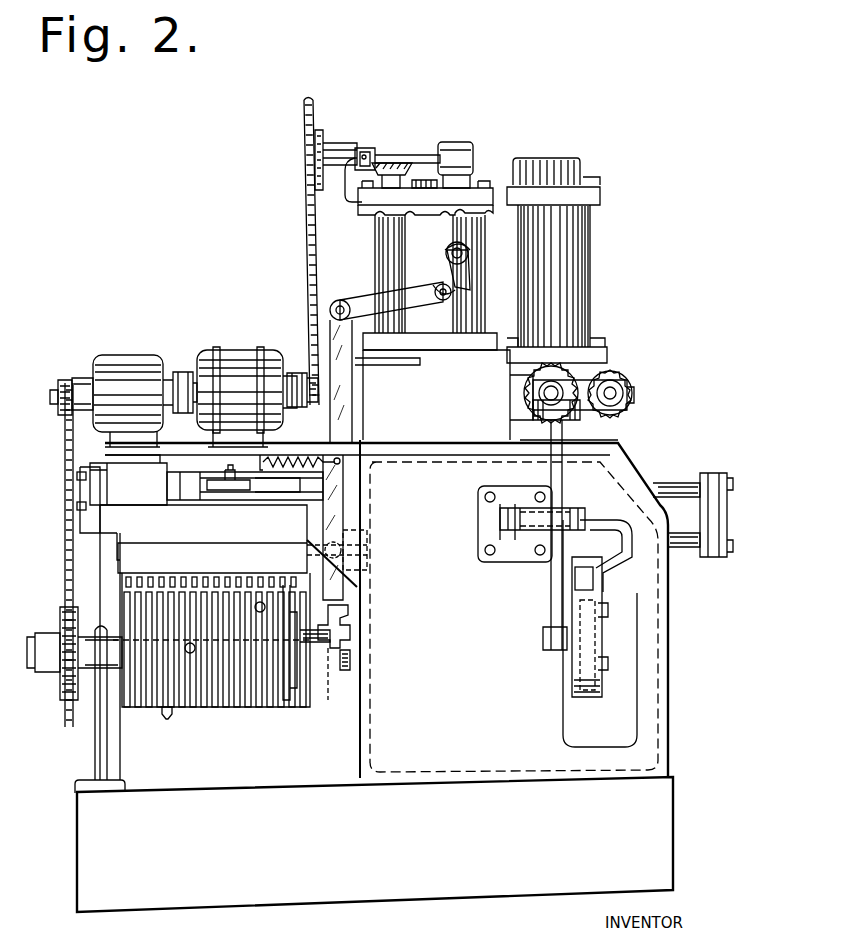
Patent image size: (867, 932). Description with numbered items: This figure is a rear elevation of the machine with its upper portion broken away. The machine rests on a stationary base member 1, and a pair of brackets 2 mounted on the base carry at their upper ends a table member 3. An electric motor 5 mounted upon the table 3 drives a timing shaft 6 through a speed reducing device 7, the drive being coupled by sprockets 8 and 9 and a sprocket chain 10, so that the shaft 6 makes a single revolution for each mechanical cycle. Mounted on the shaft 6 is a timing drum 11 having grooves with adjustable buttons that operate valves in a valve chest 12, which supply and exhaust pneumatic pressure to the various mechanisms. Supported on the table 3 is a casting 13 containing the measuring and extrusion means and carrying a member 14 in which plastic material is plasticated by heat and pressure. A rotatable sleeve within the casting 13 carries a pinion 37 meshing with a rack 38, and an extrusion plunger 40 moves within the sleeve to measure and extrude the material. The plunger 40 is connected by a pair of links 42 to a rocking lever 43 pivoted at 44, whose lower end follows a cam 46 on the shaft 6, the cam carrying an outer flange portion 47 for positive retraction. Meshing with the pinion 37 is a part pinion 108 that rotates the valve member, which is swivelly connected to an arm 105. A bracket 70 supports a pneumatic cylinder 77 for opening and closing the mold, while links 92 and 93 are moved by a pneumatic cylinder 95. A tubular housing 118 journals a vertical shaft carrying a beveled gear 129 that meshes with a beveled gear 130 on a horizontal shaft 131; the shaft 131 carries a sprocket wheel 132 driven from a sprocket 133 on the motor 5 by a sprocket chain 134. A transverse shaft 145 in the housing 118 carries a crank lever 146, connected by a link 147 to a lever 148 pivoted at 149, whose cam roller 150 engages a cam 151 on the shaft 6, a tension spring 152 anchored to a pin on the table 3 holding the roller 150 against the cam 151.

The base member 1 is at (663, 790).
The brackets 2 is at (653, 643).
The table member 3 is at (607, 440).
The electric motor 5 is at (233, 347).
The timing shaft 6 is at (300, 665).
The speed reducing device 7 is at (133, 360).
The sprocket 8 is at (63, 385).
The sprocket 9 is at (67, 707).
The sprocket chain 10 is at (65, 468).
The timing drum 11 is at (233, 683).
The valve chest 12 is at (147, 562).
The casting 13 is at (573, 380).
The plasticating member 14 is at (557, 228).
The pinion 37 is at (550, 377).
The rack 38 is at (523, 373).
The extrusion plunger 40 is at (560, 390).
The links 42 is at (617, 410).
The rocking lever 43 is at (550, 465).
The pivot 44 is at (577, 520).
The cam 46 is at (597, 592).
The outer flange portion 47 is at (580, 567).
The bracket 70 is at (643, 563).
The pneumatic cylinder 77 is at (680, 487).
The link 92 is at (257, 490).
The link 93 is at (243, 495).
The pneumatic cylinder 95 is at (137, 492).
The arm 105 is at (603, 366).
The part pinion 108 is at (613, 366).
The tubular housing 118 is at (375, 225).
The beveled gear 129 is at (408, 163).
The beveled gear 130 is at (367, 150).
The horizontal shaft 131 is at (388, 155).
The sprocket wheel 132 is at (303, 117).
The sprocket 133 is at (305, 345).
The sprocket chain 134 is at (305, 235).
The transverse shaft 145 is at (463, 247).
The crank lever 146 is at (463, 287).
The link 147 is at (362, 300).
The lever 148 is at (333, 393).
The pivot 149 is at (367, 547).
The cam roller 150 is at (335, 687).
The cam 151 is at (347, 625).
The tension spring 152 is at (300, 443).